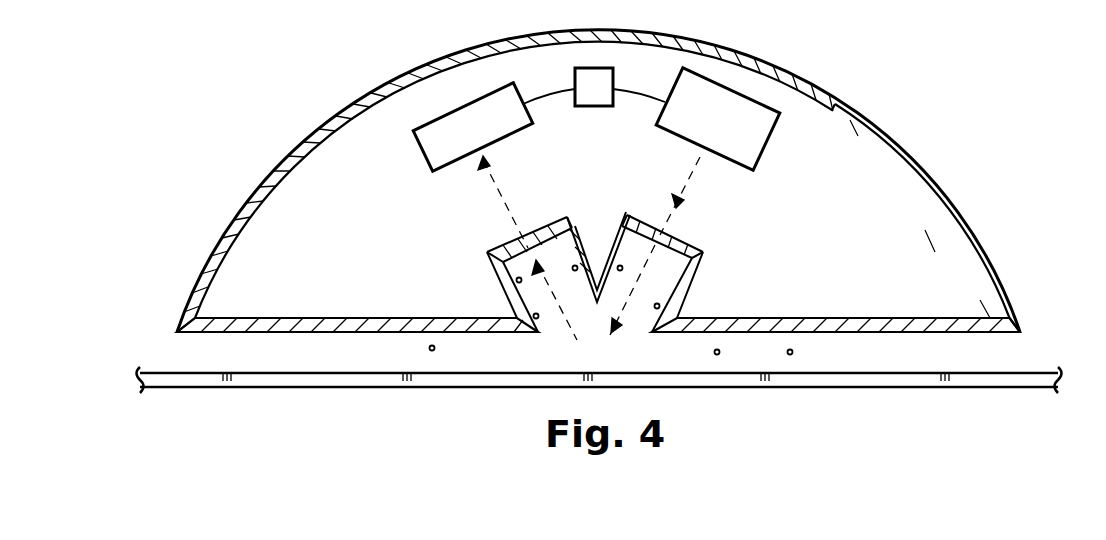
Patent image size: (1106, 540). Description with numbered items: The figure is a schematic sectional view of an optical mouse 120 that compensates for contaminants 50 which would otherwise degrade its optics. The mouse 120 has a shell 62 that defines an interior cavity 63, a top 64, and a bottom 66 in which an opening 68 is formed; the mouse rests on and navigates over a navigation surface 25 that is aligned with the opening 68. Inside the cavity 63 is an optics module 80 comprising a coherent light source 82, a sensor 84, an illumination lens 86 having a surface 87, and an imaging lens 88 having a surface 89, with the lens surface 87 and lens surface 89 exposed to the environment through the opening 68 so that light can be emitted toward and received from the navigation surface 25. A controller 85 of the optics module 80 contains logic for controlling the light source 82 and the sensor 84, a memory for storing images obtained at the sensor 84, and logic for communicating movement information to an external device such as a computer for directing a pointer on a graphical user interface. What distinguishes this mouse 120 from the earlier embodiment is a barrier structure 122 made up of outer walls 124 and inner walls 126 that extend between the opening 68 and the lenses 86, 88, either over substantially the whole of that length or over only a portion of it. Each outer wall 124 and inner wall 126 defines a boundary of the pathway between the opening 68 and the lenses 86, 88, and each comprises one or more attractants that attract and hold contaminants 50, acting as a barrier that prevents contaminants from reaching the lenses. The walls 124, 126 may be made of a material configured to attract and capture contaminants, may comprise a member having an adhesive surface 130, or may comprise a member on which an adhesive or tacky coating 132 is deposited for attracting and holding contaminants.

The navigation surface 25 is at (747, 372).
The contaminants 50 is at (793, 354).
The shell 62 is at (1006, 272).
The cavity 63 is at (905, 243).
The top 64 is at (682, 36).
The bottom 66 is at (843, 333).
The opening 68 is at (652, 333).
The optics module 80 is at (441, 88).
The coherent light source 82 is at (765, 147).
The sensor 84 is at (420, 143).
The controller 85 is at (591, 68).
The illumination lens 86 is at (657, 227).
The surface of illumination lens 87 is at (670, 240).
The imaging lens 88 is at (548, 228).
The surface of imaging lens 89 is at (505, 238).
The optical mouse 120 is at (944, 179).
The barrier structure 122 is at (614, 215).
The outer walls 124 is at (500, 290).
The inner walls 126 is at (600, 240).
The adhesive surface 130 is at (552, 317).
The adhesive or tacky coating 132 is at (632, 310).